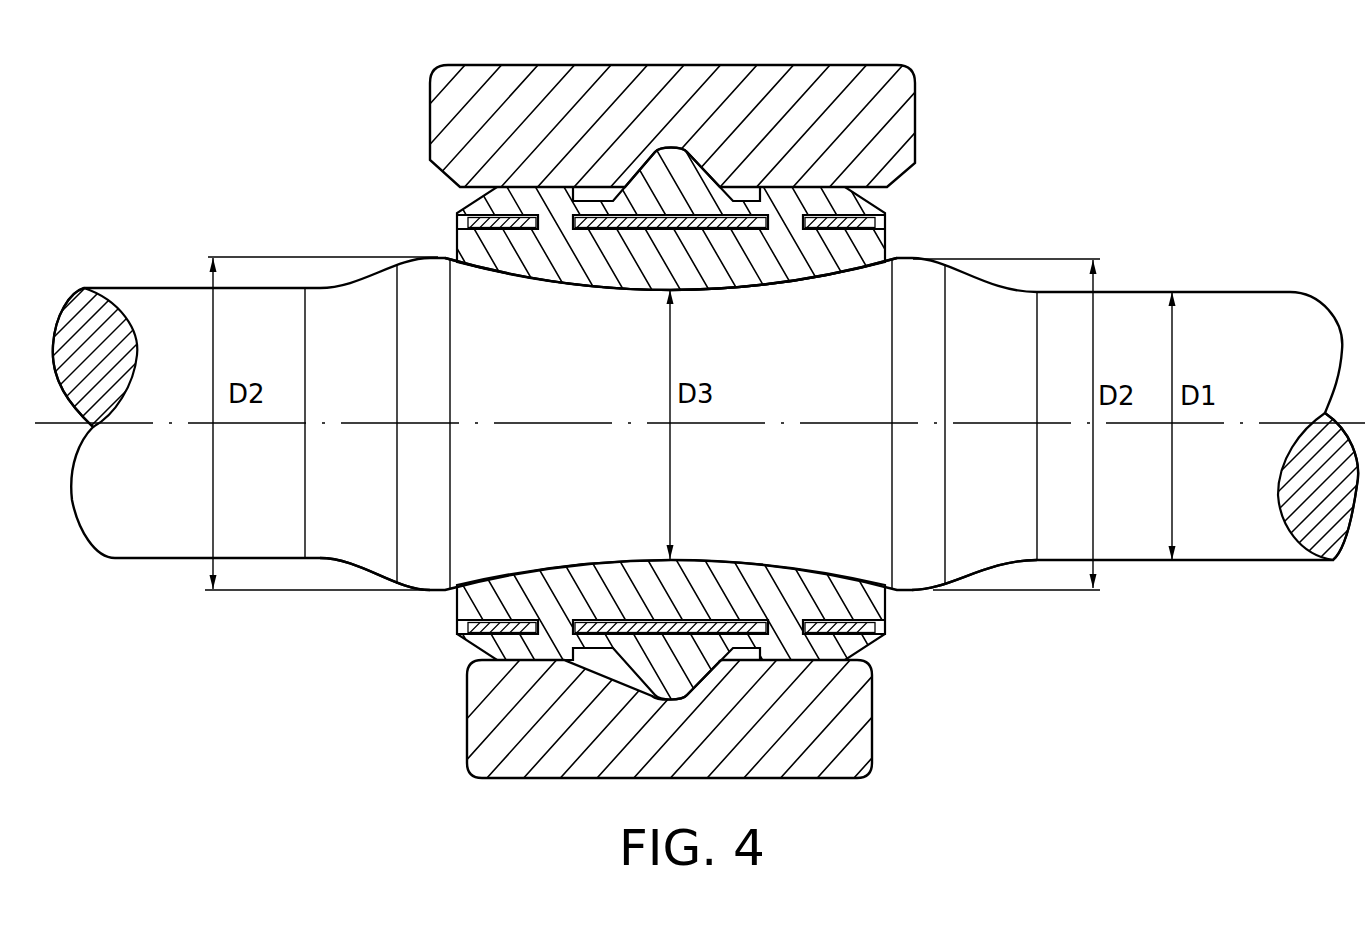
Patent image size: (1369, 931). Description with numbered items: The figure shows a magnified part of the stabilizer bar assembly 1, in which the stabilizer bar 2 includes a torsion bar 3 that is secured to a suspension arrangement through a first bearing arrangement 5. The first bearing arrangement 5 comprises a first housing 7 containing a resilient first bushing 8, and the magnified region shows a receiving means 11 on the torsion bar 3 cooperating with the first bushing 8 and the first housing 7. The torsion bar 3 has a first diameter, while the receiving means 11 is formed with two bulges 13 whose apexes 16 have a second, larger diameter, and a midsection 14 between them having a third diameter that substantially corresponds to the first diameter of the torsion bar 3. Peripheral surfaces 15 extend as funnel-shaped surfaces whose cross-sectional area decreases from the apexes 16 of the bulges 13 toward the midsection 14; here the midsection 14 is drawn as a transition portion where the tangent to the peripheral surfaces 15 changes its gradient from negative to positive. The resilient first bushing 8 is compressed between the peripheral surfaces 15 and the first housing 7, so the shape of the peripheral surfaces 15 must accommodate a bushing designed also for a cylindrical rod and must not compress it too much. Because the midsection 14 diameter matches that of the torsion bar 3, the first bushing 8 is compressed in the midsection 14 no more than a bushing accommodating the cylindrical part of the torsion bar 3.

The stabilizer bar assembly 1 is at (1247, 125).
The stabilizer bar 2 is at (162, 313).
The torsion bar 3 is at (163, 545).
The first bearing arrangement 5 is at (900, 127).
The first housing 7 is at (840, 77).
The first bushing 8 is at (857, 252).
The receiving means 11 is at (452, 606).
The bulges 13 is at (393, 589).
The midsection 14 is at (658, 290).
The peripheral surfaces 15 is at (507, 277).
The apexes 16 is at (423, 590).